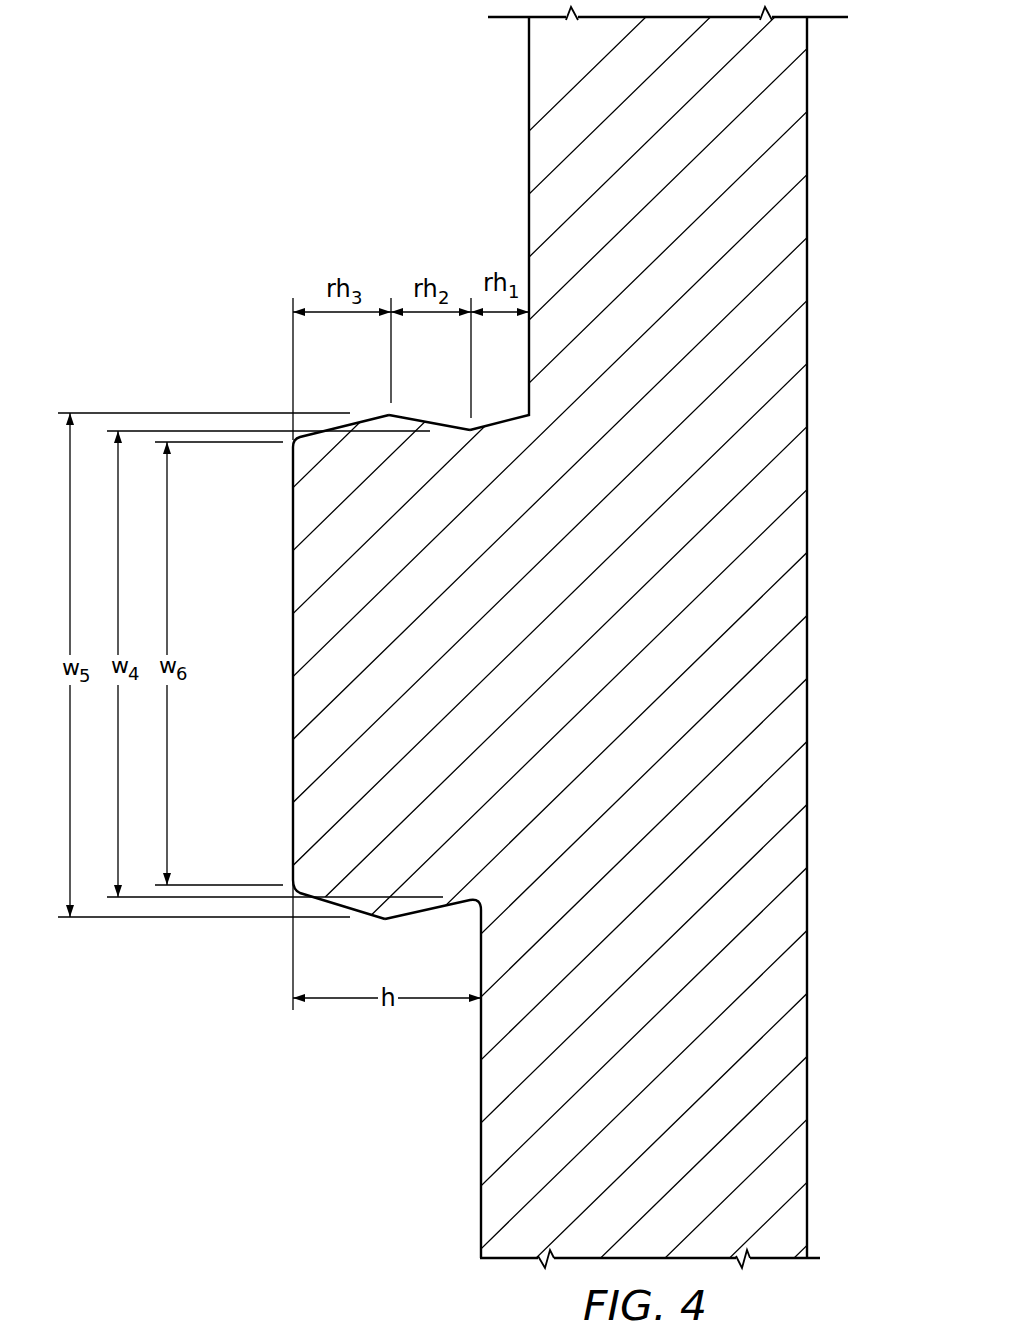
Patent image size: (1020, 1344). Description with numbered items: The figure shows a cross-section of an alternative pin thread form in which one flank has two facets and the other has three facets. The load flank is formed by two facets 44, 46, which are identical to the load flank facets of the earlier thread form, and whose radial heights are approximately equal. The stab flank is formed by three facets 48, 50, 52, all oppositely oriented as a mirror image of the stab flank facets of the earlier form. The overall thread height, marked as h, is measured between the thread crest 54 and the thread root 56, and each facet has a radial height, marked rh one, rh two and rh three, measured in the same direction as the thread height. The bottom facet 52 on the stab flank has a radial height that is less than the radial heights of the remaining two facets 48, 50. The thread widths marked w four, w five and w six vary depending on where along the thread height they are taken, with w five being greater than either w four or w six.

The load flank facet 44 is at (427, 910).
The load flank facet 46 is at (347, 912).
The stab flank facet 48 is at (350, 425).
The stab flank facet 50 is at (424, 426).
The bottom facet of stab flank 52 is at (513, 418).
The thread crest 54 is at (292, 752).
The thread root 56 is at (481, 1077).